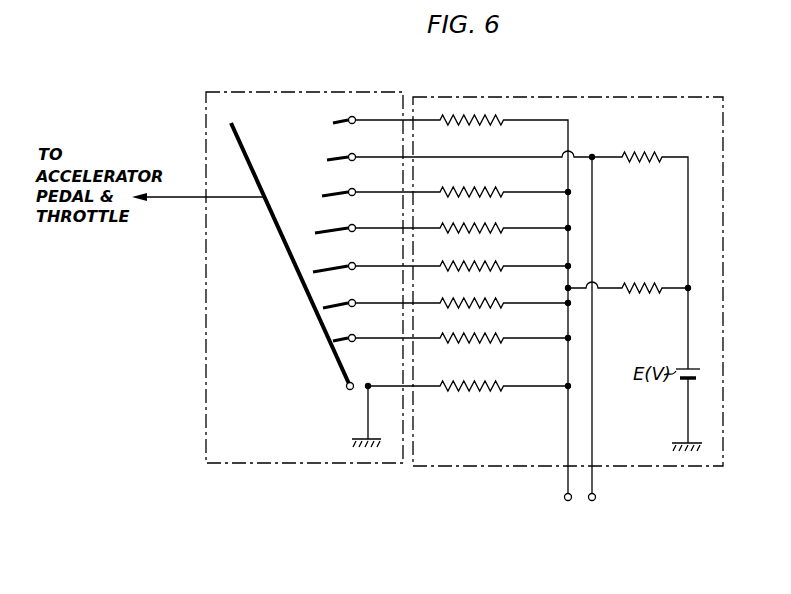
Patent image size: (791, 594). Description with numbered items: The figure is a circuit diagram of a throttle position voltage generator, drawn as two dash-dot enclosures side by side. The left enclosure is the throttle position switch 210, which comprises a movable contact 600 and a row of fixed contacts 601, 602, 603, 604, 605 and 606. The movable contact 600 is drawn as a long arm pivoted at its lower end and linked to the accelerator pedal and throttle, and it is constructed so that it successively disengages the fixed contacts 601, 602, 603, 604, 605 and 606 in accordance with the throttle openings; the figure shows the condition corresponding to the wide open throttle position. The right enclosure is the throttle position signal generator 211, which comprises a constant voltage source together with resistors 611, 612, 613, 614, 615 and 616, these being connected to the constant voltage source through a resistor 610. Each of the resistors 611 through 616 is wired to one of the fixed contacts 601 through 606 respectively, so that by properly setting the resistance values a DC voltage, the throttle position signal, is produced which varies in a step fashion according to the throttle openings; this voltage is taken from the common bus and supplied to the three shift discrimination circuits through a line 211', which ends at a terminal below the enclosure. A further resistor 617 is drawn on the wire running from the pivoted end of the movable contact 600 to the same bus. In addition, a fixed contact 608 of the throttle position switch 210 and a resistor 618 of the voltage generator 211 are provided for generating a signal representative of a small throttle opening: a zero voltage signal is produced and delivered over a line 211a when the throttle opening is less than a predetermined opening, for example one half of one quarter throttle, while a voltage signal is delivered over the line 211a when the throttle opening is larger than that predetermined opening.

The throttle position switch 210 is at (321, 92).
The throttle position signal generator 211 is at (568, 262).
The line 211' is at (536, 485).
The line 211a is at (593, 484).
The movable contact 600 is at (297, 272).
The fixed contact 601 is at (343, 120).
The fixed contact 608 is at (341, 157).
The fixed contact 602 is at (333, 193).
The fixed contact 603 is at (332, 229).
The fixed contact 604 is at (332, 267).
The fixed contact 605 is at (334, 304).
The fixed contact 606 is at (340, 338).
The resistor 611 is at (474, 127).
The resistor 612 is at (480, 199).
The resistor 613 is at (483, 234).
The resistor 614 is at (483, 272).
The resistor 615 is at (483, 309).
The resistor 616 is at (480, 344).
The resistor 617 is at (483, 393).
The resistor 618 is at (634, 155).
The resistor 610 is at (634, 284).